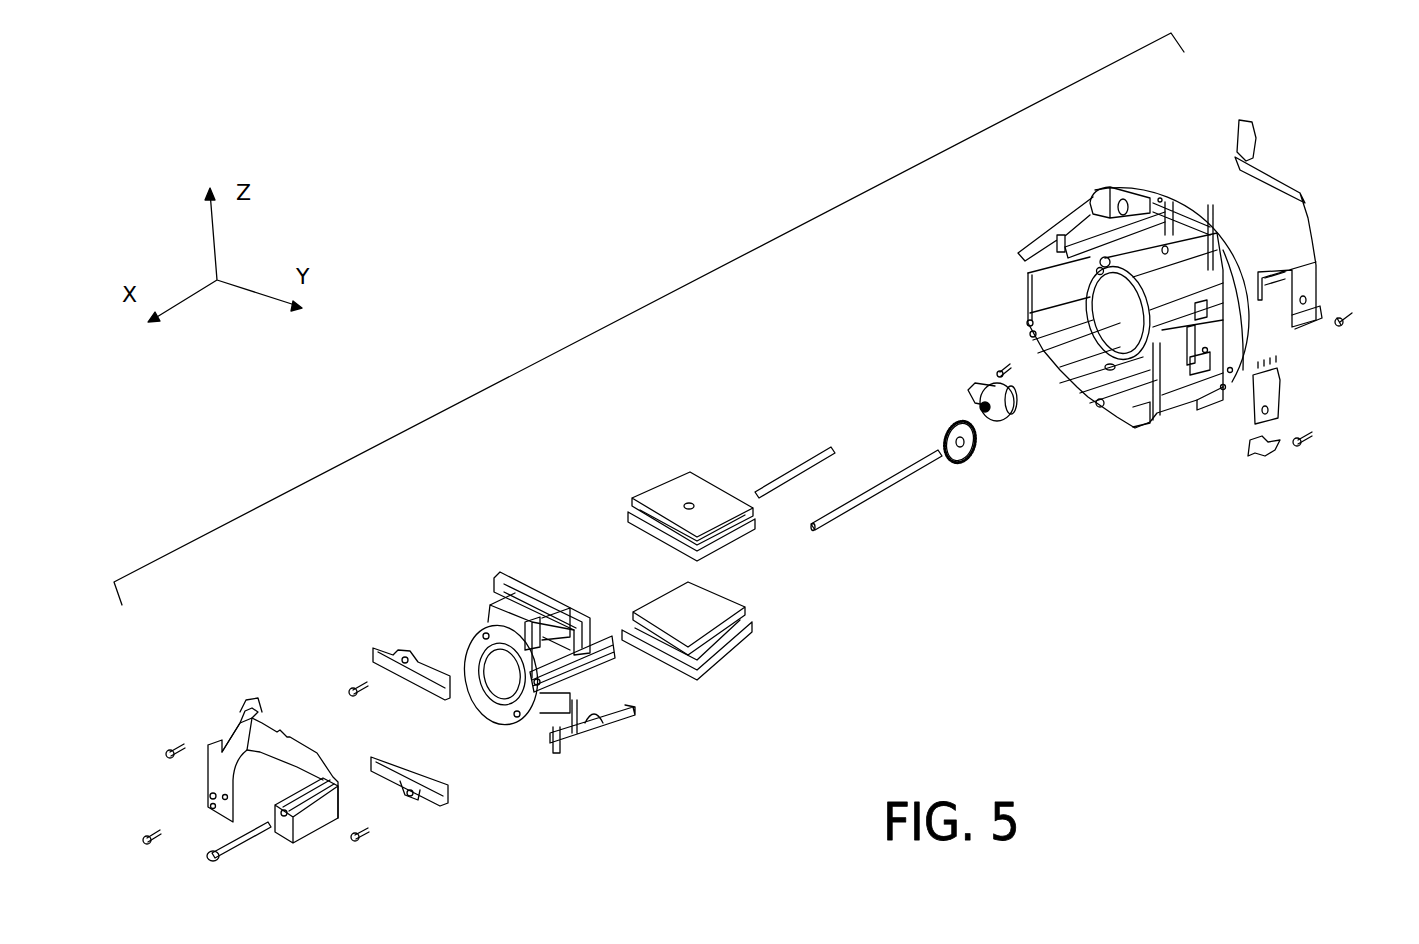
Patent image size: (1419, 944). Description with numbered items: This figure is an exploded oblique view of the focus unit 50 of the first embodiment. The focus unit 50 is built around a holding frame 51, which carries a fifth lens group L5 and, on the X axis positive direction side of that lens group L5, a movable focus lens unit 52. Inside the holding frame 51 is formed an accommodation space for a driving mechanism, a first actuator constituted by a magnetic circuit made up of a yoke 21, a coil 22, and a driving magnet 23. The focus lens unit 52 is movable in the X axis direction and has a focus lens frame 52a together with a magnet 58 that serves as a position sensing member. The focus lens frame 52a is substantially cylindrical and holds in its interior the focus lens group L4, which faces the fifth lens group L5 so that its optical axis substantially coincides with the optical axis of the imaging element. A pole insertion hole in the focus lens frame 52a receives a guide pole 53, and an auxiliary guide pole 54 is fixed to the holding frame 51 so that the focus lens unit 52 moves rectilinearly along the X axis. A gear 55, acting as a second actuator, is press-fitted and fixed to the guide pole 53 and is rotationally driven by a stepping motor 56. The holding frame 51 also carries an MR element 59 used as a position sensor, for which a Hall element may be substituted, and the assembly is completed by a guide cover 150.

The focus unit 50 is at (642, 302).
The holding frame 51 is at (1097, 195).
The fifth lens group L5 is at (1112, 305).
The focus lens unit 52 is at (574, 613).
The focus lens frame 52a is at (515, 620).
The coil 22 is at (530, 580).
The focus lens group L4 is at (502, 678).
The magnet 58 is at (615, 665).
The yoke 21 is at (682, 490).
The driving magnet 23 is at (645, 518).
The guide pole 53 is at (877, 497).
The auxiliary guide pole 54 is at (805, 460).
The gear 55 is at (975, 455).
The stepping motor 56 is at (1013, 417).
The MR element 59 is at (1275, 393).
The guide cover 150 is at (264, 742).